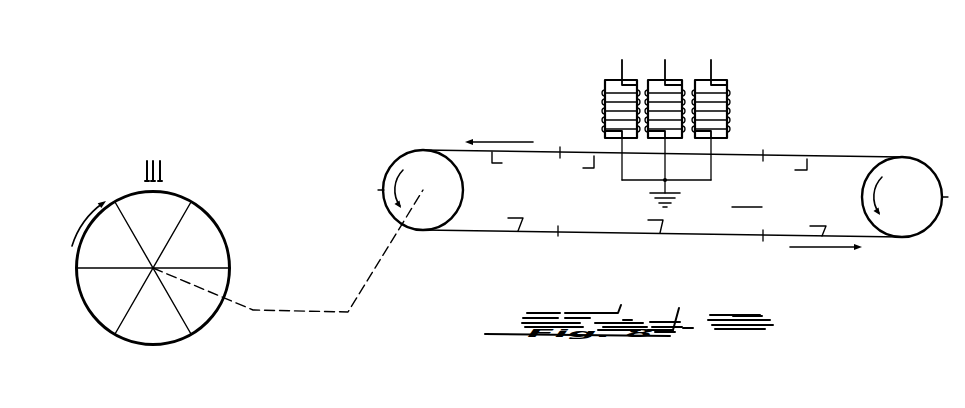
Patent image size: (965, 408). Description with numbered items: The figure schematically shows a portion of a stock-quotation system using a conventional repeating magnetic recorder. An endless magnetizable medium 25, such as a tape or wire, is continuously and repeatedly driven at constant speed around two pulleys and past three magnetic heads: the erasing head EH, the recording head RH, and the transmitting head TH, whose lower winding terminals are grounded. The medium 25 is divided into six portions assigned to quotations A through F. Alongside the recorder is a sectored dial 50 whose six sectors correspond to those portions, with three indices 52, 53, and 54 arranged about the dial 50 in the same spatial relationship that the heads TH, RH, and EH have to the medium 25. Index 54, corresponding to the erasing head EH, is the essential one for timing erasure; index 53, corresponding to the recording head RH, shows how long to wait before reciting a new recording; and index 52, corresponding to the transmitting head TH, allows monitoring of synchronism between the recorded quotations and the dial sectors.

The endless magnetizable medium 25 is at (838, 156).
The sectored dial 50 is at (222, 246).
The index 52 is at (168, 164).
The index 53 is at (163, 140).
The index 54 is at (145, 164).
The transmitting head TH is at (605, 86).
The recording head RH is at (690, 50).
The erasing head EH is at (766, 74).